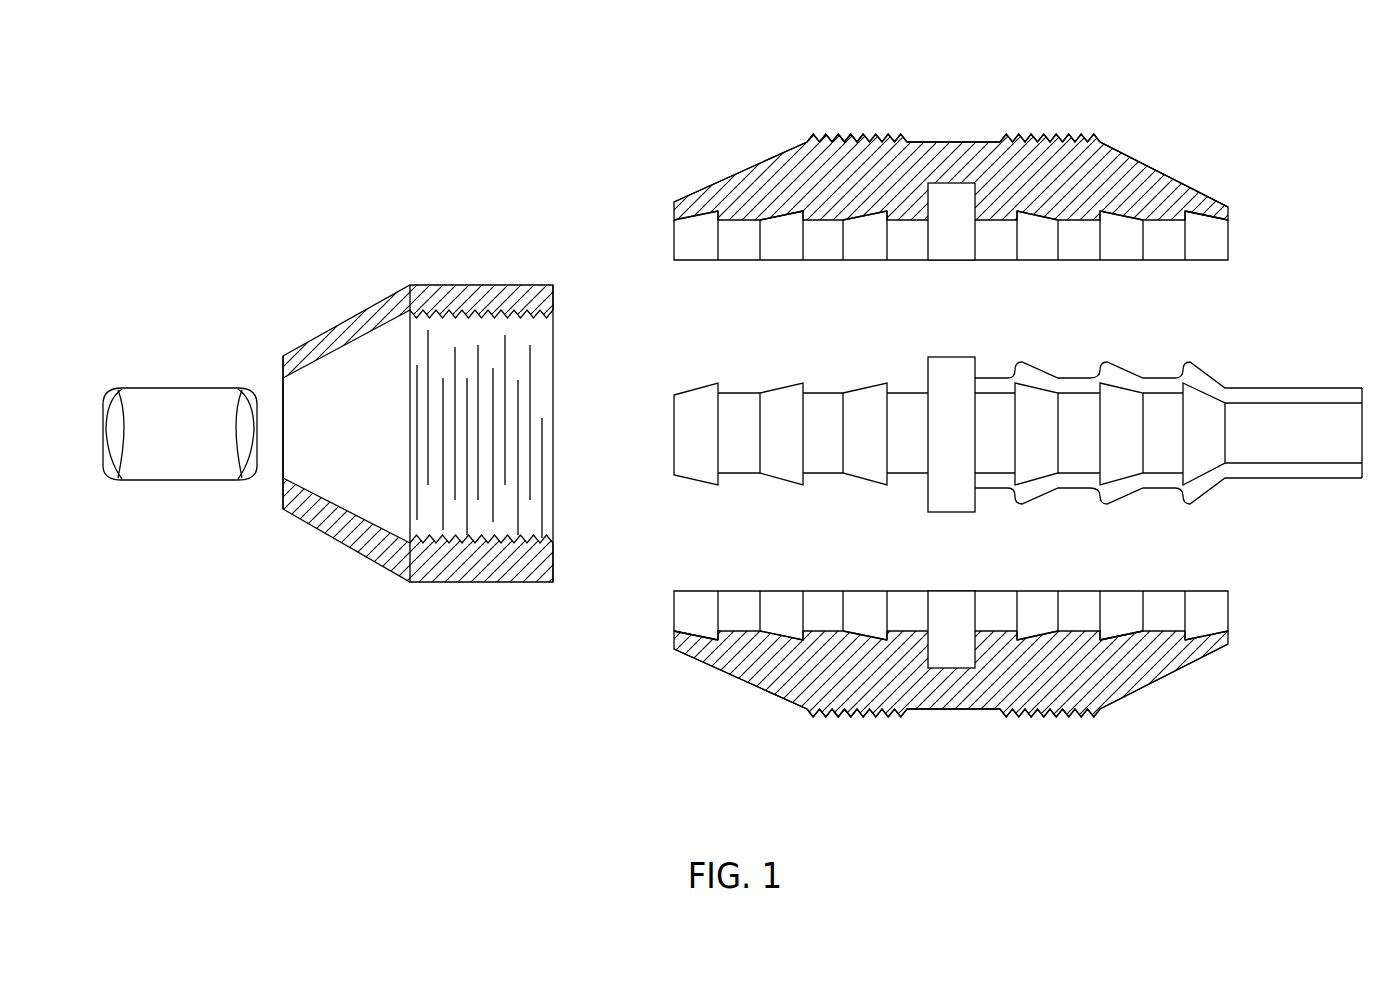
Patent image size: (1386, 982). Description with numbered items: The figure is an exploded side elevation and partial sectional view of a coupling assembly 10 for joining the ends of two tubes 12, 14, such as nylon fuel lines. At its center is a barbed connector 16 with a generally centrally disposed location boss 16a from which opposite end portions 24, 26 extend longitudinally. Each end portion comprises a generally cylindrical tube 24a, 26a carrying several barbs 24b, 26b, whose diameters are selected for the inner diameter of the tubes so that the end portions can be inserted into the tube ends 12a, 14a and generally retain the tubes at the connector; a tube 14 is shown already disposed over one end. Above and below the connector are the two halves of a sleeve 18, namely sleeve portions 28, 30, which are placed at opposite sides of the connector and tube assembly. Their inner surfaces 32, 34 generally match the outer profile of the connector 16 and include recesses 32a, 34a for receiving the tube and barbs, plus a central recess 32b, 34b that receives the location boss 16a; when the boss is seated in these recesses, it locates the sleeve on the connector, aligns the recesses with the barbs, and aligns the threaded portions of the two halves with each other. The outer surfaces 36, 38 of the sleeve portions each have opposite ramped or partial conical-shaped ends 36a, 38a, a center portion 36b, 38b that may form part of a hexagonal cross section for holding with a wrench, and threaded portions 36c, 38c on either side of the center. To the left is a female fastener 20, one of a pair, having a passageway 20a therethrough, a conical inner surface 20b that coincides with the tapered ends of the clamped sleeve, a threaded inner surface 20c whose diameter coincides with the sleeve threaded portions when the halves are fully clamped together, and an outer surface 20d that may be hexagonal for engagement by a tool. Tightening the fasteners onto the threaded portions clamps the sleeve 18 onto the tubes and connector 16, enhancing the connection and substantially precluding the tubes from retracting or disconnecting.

The coupling assembly 10 is at (650, 99).
The tube 12 is at (162, 494).
The tube end 12a is at (178, 387).
The tube 14 is at (1172, 407).
The tube end 14a is at (1067, 380).
The barbed connector 16 is at (918, 426).
The location boss 16a is at (948, 368).
The sleeve 18 is at (985, 177).
The female fastener 20 is at (382, 399).
The passageway 20a is at (324, 461).
The conical inner surface 20b is at (330, 357).
The threaded inner surface 20c is at (505, 291).
The outer surface 20d is at (475, 583).
The end portion 24 is at (801, 438).
The cylindrical tube 24a is at (832, 458).
The barb 24b is at (797, 381).
The end portion 26 is at (1103, 426).
The cylindrical tube 26a is at (1160, 410).
The barb 26b is at (1021, 490).
The sleeve portion 28 is at (1148, 158).
The sleeve portion 30 is at (934, 677).
The inner surface 32 is at (866, 238).
The recess 32a is at (800, 218).
The central recess 32b is at (955, 208).
The inner surface 34 is at (903, 608).
The recess 34a is at (713, 633).
The central recess 34b is at (960, 640).
The outer surface 36 is at (917, 132).
The tapered end 36a is at (752, 165).
The center portion 36b is at (1000, 138).
The threaded portion 36c is at (858, 134).
The outer surface 38 is at (980, 730).
The tapered end 38a is at (730, 672).
The center portion 38b is at (912, 712).
The threaded portion 38c is at (845, 714).